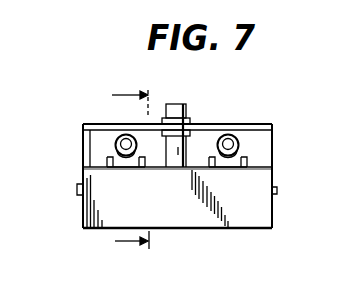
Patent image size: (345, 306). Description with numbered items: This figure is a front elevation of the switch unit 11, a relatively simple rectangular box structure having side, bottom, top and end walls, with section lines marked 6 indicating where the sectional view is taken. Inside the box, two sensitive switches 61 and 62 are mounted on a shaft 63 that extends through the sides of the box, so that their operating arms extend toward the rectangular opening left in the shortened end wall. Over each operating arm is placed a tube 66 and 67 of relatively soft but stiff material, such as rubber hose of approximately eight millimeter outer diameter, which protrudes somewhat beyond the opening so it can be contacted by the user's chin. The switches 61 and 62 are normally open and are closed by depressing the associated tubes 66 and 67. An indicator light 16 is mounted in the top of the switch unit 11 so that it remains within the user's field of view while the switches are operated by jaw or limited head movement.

The section line 6- 6 is at (127, 179).
The switch unit 11 is at (272, 208).
The indicator light 16 is at (187, 110).
The sensitive switch 61 is at (107, 162).
The sensitive switch 62 is at (247, 162).
The shaft 63 is at (77, 189).
The tube 66 is at (117, 150).
The tube 67 is at (239, 141).